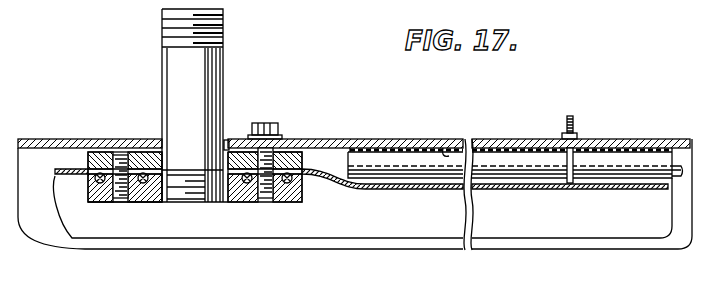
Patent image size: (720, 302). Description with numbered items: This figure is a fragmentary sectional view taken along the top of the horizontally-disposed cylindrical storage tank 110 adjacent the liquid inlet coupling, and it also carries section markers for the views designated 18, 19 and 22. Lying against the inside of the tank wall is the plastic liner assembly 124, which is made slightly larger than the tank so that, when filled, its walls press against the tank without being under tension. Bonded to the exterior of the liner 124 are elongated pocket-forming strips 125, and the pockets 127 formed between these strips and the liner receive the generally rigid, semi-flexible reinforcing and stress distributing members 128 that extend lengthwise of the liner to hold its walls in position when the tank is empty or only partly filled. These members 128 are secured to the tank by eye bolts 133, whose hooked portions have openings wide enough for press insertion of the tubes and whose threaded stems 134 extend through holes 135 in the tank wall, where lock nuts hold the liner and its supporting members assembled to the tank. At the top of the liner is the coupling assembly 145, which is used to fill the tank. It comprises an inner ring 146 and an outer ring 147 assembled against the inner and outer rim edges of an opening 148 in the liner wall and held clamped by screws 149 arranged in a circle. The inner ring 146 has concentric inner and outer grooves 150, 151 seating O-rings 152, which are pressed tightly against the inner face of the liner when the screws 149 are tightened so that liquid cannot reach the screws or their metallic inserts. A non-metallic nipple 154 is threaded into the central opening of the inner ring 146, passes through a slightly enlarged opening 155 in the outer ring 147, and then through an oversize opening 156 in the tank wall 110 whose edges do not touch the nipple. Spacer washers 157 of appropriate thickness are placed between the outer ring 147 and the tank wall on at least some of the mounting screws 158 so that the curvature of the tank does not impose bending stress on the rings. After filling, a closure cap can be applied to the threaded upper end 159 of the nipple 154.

The storage tank 110 is at (375, 136).
The liner assembly 124 is at (412, 193).
The pocket-forming strips 125 is at (446, 150).
The pockets 127 is at (541, 190).
The reinforcing and stress distributing members 128 is at (658, 157).
The eye bolts 133 is at (576, 158).
The threaded stems 134 is at (566, 120).
The holes 135 is at (582, 139).
The coupling assembly 145 is at (230, 63).
The inner ring 146 is at (153, 202).
The outer ring 147 is at (96, 156).
The opening 148 is at (167, 166).
The screws 149 is at (128, 157).
The inner groove 150 is at (285, 204).
The outer groove 151 is at (239, 204).
The O-rings 152 is at (133, 203).
The nipple 154 is at (167, 59).
The enlarged opening 155 is at (221, 164).
The oversize opening 156 is at (232, 140).
The spacer washers 157 is at (286, 141).
The mounting screws 158 is at (265, 123).
The threaded upper end 159 is at (224, 17).
The section line 18- 18 is at (323, 63).
The section line 19- 19 is at (28, 173).
The section line 22- 22 is at (572, 75).